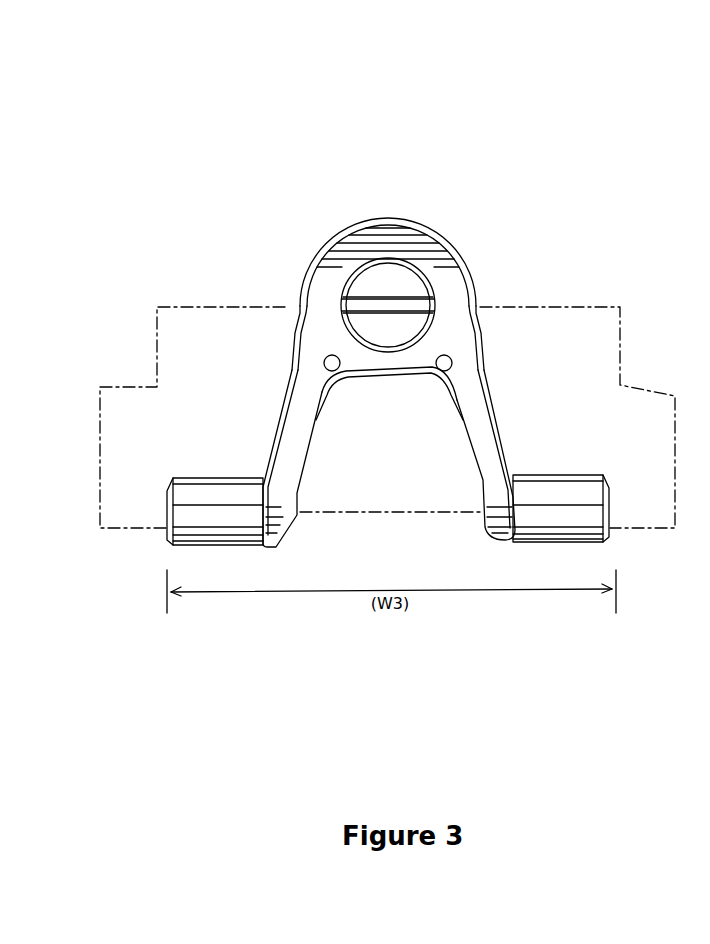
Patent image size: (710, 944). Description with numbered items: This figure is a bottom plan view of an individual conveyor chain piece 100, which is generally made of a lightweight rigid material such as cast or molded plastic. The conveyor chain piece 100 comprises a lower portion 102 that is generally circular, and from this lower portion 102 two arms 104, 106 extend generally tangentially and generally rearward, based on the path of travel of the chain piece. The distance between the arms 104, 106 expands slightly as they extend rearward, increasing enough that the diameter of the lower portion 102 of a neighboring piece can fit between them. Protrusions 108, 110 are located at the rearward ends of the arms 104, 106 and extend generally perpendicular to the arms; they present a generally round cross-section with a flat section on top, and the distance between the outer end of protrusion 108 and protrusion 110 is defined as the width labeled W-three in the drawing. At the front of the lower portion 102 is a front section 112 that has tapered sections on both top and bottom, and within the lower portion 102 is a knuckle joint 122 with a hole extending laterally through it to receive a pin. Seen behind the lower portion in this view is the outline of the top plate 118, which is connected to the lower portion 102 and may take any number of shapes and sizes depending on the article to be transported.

The conveyor chain piece 100 is at (197, 105).
The lower portion 102 is at (399, 284).
The arm 104 is at (290, 433).
The arm 106 is at (483, 443).
The protrusion 108 is at (186, 492).
The protrusion 110 is at (577, 493).
The front section 112 is at (393, 212).
The top plate 118 is at (603, 342).
The knuckle joint 122 is at (371, 290).